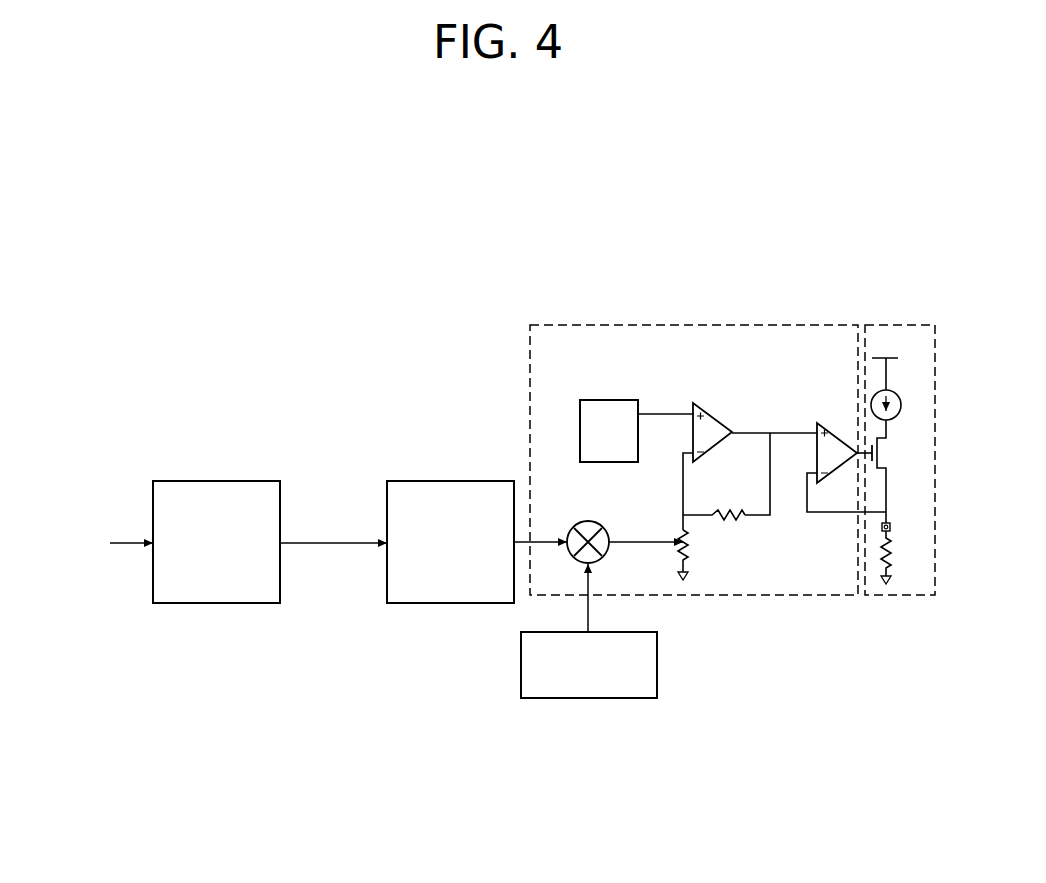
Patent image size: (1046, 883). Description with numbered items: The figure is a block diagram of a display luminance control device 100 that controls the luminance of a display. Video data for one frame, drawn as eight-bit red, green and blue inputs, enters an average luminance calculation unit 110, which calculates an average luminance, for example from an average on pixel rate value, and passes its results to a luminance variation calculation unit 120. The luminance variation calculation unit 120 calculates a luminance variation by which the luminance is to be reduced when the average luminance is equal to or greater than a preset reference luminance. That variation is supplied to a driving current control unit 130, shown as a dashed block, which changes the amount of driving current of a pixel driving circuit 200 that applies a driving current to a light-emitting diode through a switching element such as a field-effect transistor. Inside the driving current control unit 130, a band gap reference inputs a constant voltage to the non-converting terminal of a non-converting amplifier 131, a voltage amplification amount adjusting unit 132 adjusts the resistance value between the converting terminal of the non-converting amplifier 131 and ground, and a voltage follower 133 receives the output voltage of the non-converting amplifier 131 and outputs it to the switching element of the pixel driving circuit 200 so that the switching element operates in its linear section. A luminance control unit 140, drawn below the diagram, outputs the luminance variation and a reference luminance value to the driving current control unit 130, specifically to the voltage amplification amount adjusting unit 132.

The display luminance control device 100 is at (100, 322).
The average luminance calculation unit 110 is at (215, 480).
The luminance variation calculation unit 120 is at (450, 480).
The driving current control unit 130 is at (620, 323).
The non-converting amplifier 131 is at (714, 418).
The voltage amplification amount adjusting unit 132 is at (589, 521).
The voltage follower 133 is at (834, 430).
The luminance control unit 140 is at (591, 699).
The pixel driving circuit 200 is at (898, 323).